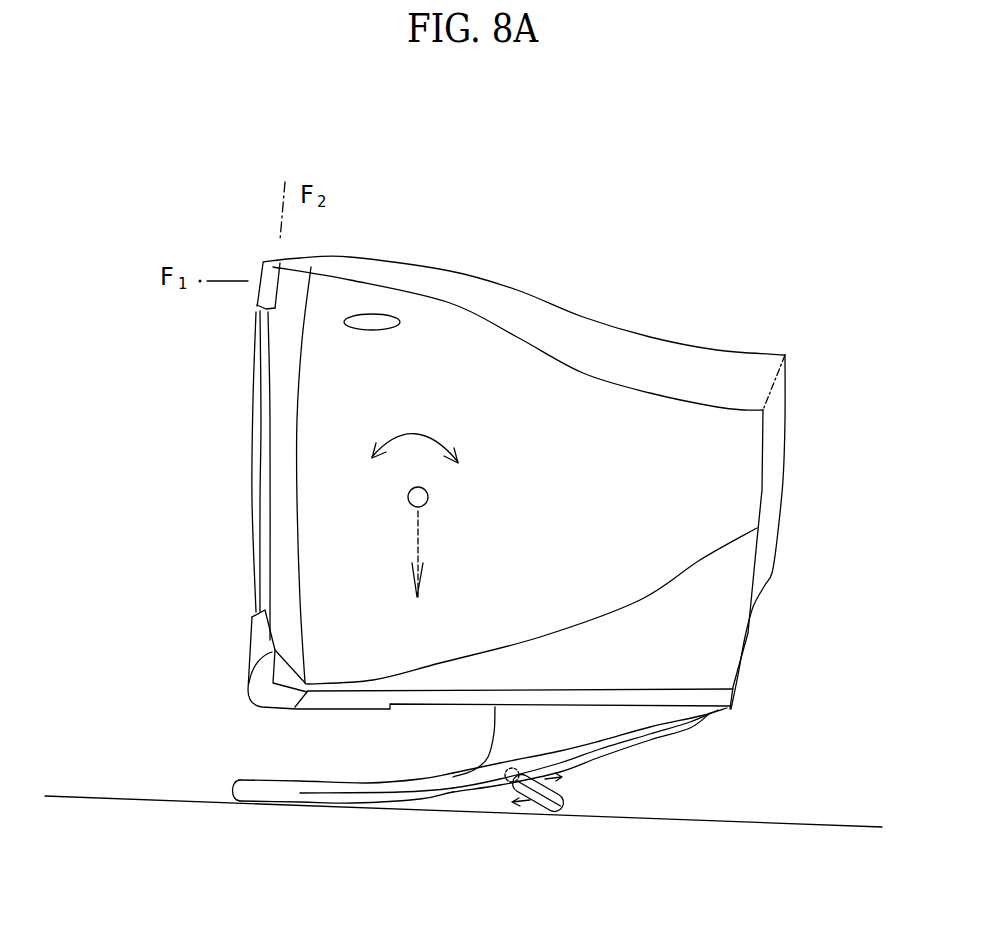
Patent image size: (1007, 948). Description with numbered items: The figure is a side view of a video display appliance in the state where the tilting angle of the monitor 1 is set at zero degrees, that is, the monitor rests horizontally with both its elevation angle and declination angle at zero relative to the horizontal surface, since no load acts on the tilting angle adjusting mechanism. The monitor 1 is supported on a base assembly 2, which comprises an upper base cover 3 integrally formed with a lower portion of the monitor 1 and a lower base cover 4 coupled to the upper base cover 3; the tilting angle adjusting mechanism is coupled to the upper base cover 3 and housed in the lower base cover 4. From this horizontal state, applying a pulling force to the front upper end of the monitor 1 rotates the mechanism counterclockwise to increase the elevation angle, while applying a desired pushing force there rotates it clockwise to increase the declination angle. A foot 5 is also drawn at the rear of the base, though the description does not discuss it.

The monitor 1 is at (750, 450).
The base assembly 2 is at (653, 745).
The upper base cover 3 is at (297, 786).
The lower base cover 4 is at (368, 800).
The support foot 5 is at (552, 813).